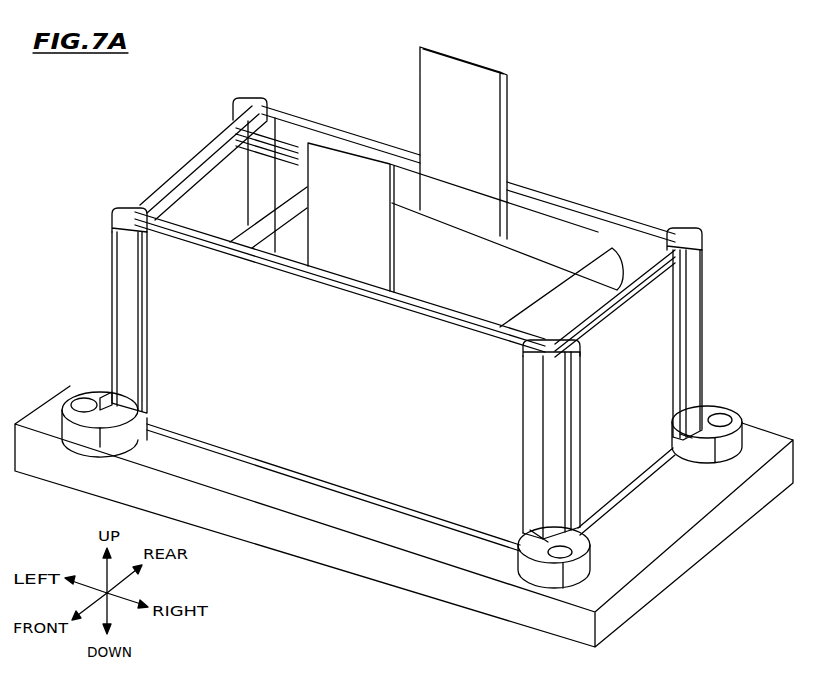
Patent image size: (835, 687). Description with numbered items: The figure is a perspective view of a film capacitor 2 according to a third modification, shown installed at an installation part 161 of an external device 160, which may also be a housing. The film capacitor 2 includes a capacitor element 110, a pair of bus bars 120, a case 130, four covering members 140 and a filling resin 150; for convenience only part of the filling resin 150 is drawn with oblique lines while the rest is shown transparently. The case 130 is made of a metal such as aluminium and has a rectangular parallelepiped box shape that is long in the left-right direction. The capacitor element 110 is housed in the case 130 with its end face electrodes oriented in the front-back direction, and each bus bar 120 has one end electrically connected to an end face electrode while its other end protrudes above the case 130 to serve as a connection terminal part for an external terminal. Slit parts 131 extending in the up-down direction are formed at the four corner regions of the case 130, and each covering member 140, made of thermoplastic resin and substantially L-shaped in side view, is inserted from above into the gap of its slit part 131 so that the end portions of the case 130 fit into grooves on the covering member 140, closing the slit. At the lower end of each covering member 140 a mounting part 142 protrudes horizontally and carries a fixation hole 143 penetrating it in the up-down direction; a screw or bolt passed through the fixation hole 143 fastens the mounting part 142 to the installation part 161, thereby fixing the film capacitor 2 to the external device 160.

The film capacitor 2 is at (163, 155).
The capacitor element 110 is at (507, 248).
The bus bar 120 is at (430, 133).
The case 130 is at (607, 210).
The slit part 131 is at (261, 104).
The covering member 140 is at (244, 105).
The mounting part 142 is at (103, 393).
The fixation hole 143 is at (72, 400).
The filling resin 150 is at (240, 146).
The external device 160 is at (268, 560).
The installation part 161 is at (360, 557).